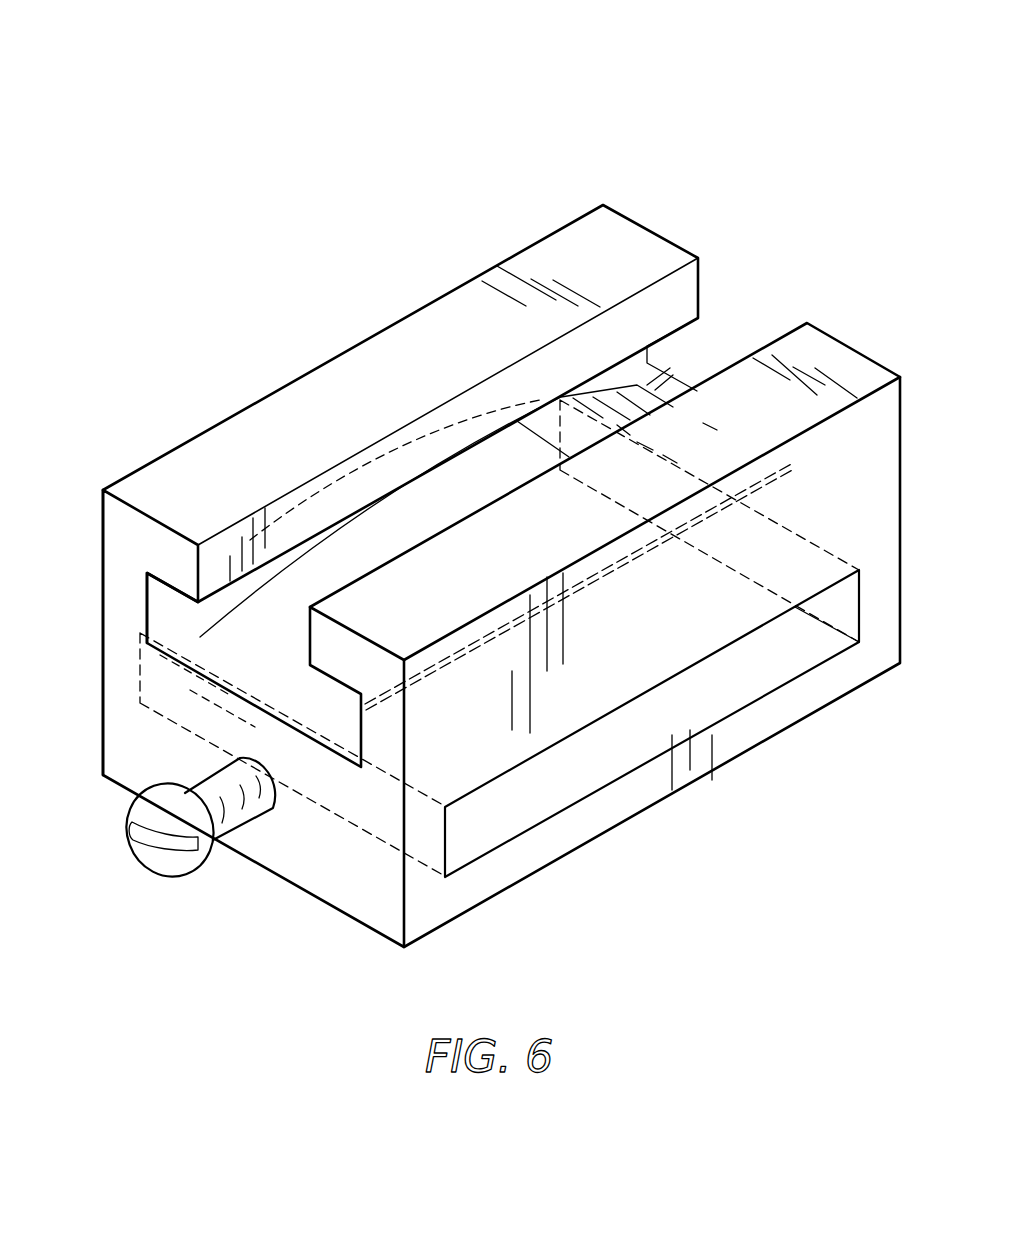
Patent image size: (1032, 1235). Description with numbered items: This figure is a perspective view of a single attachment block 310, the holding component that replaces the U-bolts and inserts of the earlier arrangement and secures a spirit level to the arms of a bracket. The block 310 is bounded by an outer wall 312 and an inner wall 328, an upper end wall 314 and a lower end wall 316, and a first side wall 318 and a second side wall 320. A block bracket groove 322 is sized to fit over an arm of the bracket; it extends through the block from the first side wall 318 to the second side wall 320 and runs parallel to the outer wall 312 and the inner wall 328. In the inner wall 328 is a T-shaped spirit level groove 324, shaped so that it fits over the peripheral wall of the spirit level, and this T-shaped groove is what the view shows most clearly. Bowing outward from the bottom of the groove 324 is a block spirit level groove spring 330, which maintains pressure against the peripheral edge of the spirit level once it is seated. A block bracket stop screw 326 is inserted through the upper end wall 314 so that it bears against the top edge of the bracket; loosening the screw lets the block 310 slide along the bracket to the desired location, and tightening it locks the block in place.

The attachment block 310 is at (470, 224).
The outer wall 312 is at (600, 845).
The upper end wall 314 is at (382, 883).
The lower end wall 316 is at (902, 408).
The first side wall 318 is at (101, 734).
The second side wall 320 is at (690, 599).
The block bracket groove 322 is at (757, 703).
The T-shaped spirit level groove 324 is at (152, 598).
The block bracket stop screw 326 is at (190, 868).
The inner wall 328 is at (438, 376).
The block spirit level groove spring 330 is at (475, 498).